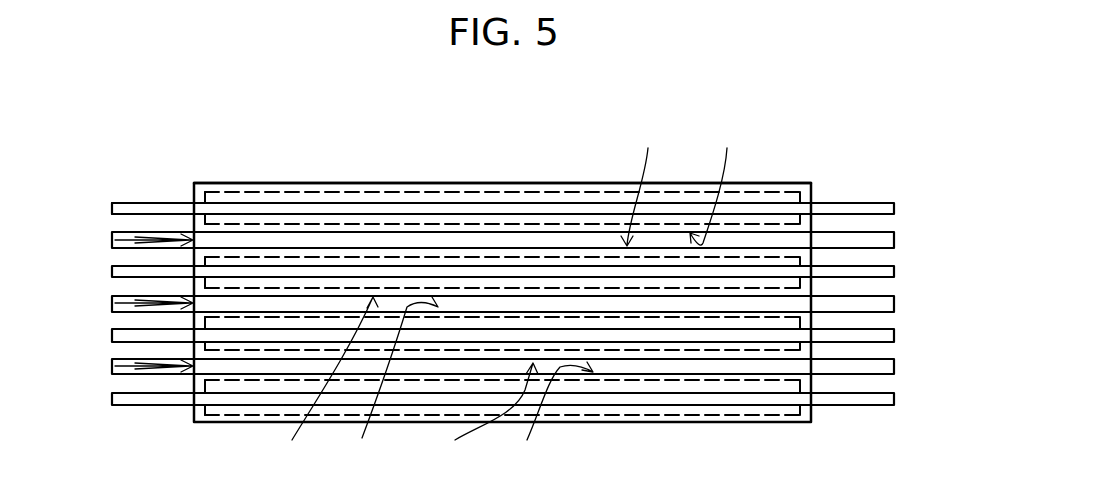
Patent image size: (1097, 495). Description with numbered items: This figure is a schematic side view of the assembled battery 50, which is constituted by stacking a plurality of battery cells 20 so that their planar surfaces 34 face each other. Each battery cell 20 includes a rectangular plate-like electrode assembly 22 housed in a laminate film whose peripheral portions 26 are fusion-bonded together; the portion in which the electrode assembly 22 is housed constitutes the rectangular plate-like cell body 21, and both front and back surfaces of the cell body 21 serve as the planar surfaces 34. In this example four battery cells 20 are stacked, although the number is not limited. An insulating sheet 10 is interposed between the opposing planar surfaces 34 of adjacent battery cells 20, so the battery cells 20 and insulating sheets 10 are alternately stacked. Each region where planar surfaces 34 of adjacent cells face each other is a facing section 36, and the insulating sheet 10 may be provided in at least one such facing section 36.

The assembled battery 50 is at (514, 106).
The insulating sheet 10 is at (893, 238).
The battery cell 20 is at (893, 203).
The cell body 21 is at (393, 183).
The electrode assembly 22 is at (538, 257).
The peripheral portions 26 is at (155, 202).
The planar surfaces 34 is at (505, 296).
The facing section 36 is at (112, 238).